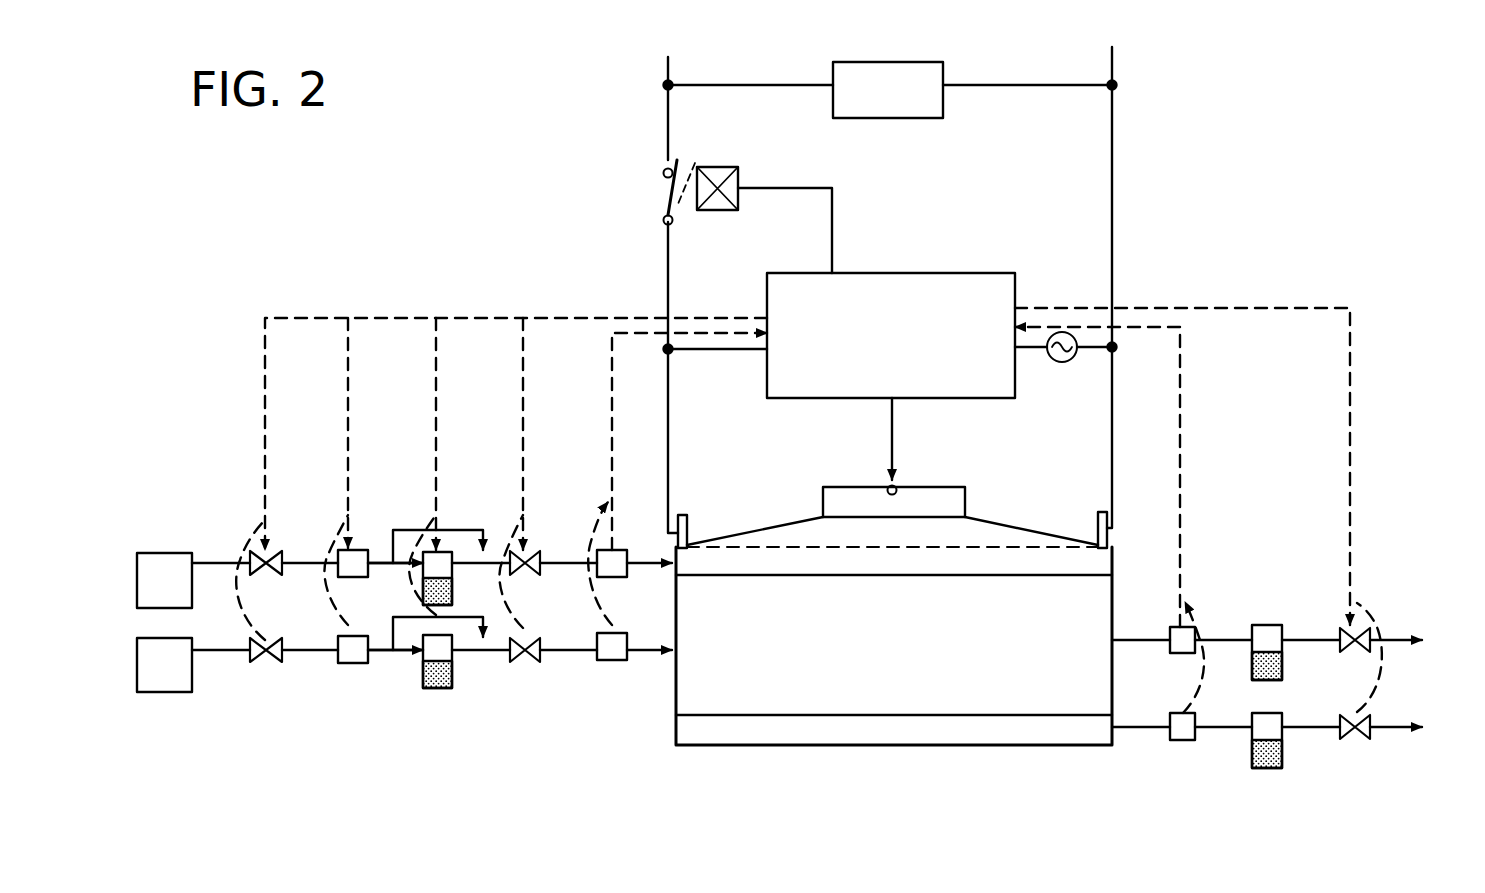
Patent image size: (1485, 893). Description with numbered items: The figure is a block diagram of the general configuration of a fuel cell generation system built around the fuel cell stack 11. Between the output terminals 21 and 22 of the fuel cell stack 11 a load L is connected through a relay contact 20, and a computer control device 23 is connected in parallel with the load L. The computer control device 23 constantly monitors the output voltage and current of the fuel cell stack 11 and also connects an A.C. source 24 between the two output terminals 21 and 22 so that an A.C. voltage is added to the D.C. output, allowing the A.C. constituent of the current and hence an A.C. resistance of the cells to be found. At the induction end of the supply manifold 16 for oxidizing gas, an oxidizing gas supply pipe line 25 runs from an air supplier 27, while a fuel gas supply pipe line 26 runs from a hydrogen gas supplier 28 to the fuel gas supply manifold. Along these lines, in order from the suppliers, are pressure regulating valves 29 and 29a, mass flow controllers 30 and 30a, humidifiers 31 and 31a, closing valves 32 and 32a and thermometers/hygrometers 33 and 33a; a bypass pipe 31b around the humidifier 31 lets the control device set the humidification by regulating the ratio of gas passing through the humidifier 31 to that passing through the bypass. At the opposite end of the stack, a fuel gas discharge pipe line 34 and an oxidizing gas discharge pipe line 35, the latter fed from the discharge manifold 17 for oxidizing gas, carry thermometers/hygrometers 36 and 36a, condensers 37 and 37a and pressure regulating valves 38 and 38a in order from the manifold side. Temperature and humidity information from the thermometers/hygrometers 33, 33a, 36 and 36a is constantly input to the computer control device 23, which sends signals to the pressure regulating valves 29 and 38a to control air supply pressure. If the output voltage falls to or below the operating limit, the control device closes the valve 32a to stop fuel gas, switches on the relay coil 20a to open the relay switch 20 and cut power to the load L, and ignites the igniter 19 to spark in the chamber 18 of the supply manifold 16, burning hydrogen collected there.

The load L is at (941, 62).
The relay contact 20 is at (665, 190).
The relay coil 20a is at (718, 167).
The computer control device 23 is at (926, 273).
The AC power source 24 is at (1064, 362).
The igniter 19 is at (895, 488).
The chamber 18 is at (962, 487).
The fuel cell stack 11 is at (1012, 522).
The output terminal 21 is at (690, 520).
The output terminal 22 is at (1097, 526).
The supply manifold for oxidizing gas 16 is at (894, 562).
The discharge manifold for oxidizing gas 17 is at (805, 743).
The air supplier 27 is at (162, 566).
The hydrogen gas supplier 28 is at (160, 682).
The oxidizing gas supply pipe line 25 is at (300, 560).
The fuel gas supply pipe line 26 is at (314, 652).
The pressure regulating valve 29 is at (266, 572).
The pressure regulating valve 29a is at (263, 662).
The mass flow controller 30 is at (355, 575).
The mass flow controller 30a is at (358, 662).
The humidifier 31 is at (452, 588).
The humidifier 31a is at (452, 677).
The bypass pipe 31b is at (456, 530).
The closing valve 32 is at (533, 572).
The closing valve 32a is at (528, 662).
The thermometer/hygrometer 33 is at (612, 575).
The thermometer/hygrometer 33a is at (612, 660).
The fuel gas discharge pipe line 34 is at (1302, 638).
The oxidizing gas discharge pipe line 35 is at (1300, 728).
The thermometer/hygrometer 36 is at (1174, 646).
The thermometer/hygrometer 36a is at (1180, 740).
The condenser 37 is at (1252, 662).
The condenser 37a is at (1254, 754).
The pressure regulating valve 38 is at (1345, 650).
The pressure regulating valve 38a is at (1362, 739).